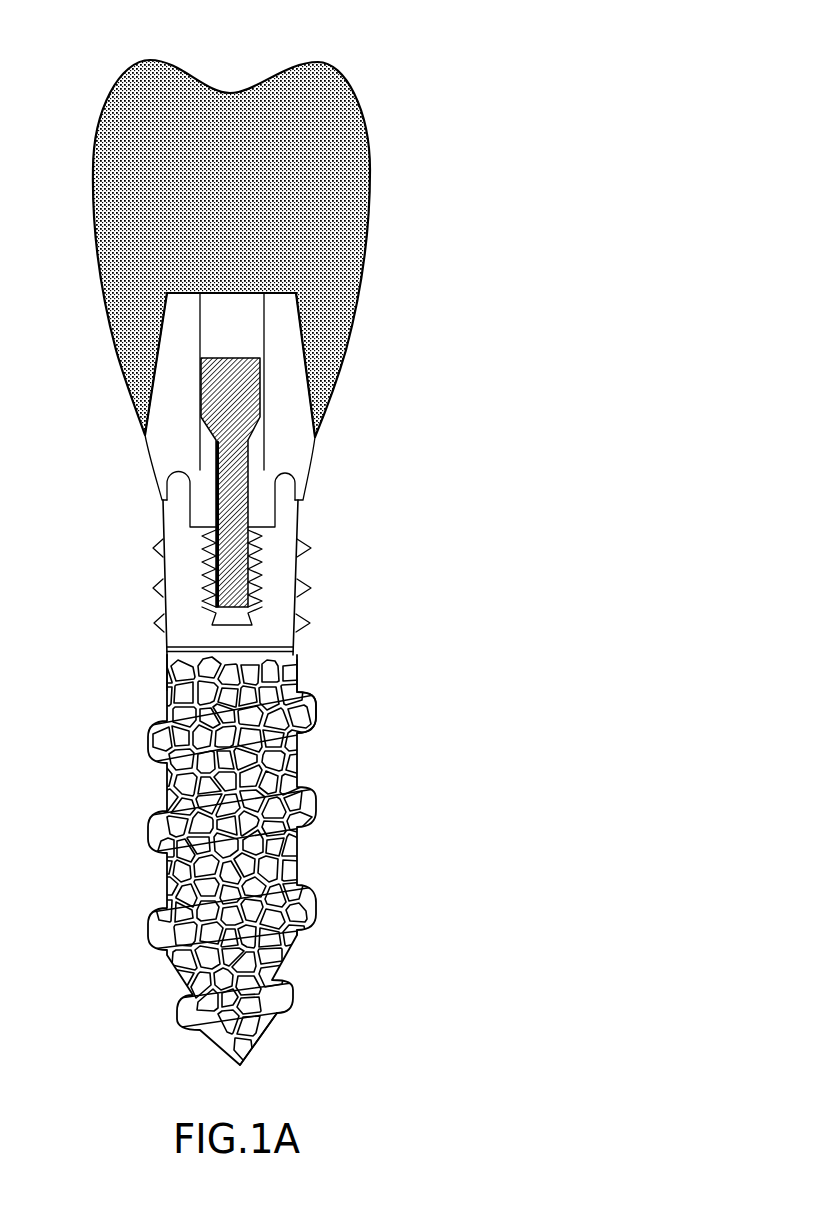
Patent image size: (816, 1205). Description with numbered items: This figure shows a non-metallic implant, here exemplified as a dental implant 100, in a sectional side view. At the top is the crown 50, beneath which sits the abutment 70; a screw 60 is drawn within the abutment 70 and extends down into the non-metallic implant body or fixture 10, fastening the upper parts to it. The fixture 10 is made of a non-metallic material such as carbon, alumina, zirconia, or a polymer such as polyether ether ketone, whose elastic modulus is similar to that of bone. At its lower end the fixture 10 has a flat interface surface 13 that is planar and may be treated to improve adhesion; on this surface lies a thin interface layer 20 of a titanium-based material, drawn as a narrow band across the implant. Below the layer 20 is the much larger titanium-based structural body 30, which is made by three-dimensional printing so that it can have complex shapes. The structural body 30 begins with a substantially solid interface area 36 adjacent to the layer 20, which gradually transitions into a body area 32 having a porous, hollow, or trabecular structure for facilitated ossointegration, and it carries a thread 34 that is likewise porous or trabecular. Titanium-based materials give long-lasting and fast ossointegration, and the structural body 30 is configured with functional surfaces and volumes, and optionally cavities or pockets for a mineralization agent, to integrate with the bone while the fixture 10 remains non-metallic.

The dental implant 100 is at (377, 88).
The crown 50 is at (347, 257).
The screw 60 is at (233, 390).
The abutment 70 is at (292, 445).
The non-metallic implant body 10 is at (275, 573).
The thin interface layer 20 is at (300, 643).
The structural body 30 is at (428, 672).
The interface area 36 is at (297, 662).
The thread 34 is at (320, 710).
The body area 32 is at (297, 952).
The flat interface surface 13 is at (170, 663).